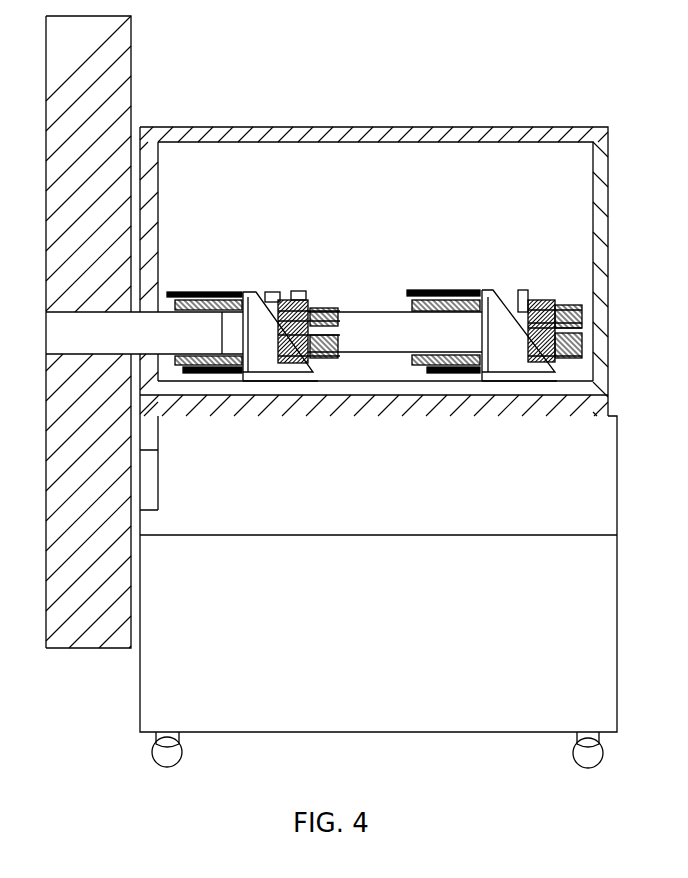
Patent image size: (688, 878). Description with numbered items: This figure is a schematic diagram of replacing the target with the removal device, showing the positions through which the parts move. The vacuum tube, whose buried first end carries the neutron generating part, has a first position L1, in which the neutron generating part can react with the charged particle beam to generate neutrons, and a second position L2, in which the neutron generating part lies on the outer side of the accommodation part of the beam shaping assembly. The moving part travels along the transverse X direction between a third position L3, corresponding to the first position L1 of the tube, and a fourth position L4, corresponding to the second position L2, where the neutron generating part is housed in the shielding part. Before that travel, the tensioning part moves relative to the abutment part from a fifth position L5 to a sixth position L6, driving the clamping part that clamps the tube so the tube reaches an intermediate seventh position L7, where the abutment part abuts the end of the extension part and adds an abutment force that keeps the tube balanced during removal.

The first position L1 is at (46, 648).
The second position L2 is at (341, 312).
The third position L3 is at (243, 381).
The fourth position L4 is at (482, 381).
The fifth position L5 is at (267, 292).
The sixth position L6 is at (294, 291).
The seventh position L7 is at (67, 312).